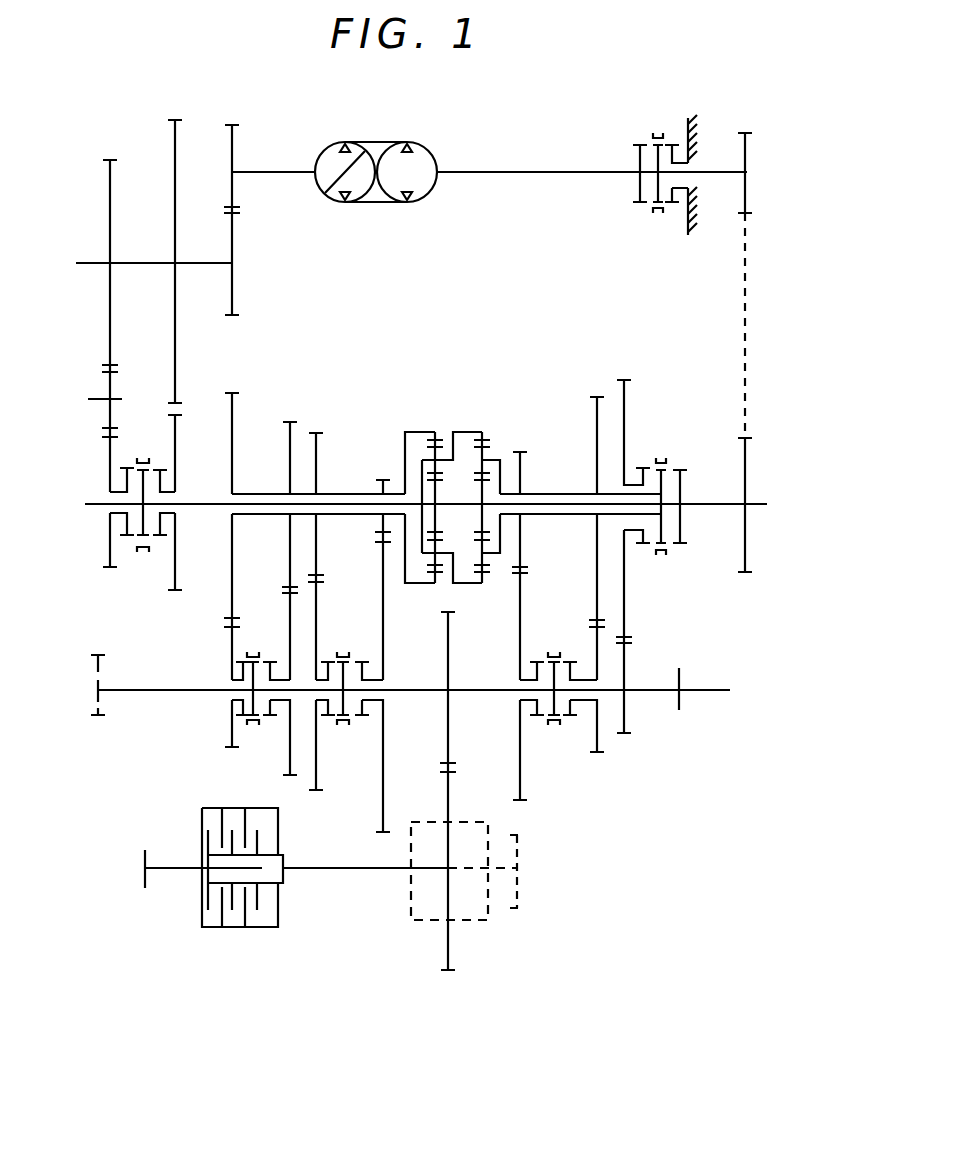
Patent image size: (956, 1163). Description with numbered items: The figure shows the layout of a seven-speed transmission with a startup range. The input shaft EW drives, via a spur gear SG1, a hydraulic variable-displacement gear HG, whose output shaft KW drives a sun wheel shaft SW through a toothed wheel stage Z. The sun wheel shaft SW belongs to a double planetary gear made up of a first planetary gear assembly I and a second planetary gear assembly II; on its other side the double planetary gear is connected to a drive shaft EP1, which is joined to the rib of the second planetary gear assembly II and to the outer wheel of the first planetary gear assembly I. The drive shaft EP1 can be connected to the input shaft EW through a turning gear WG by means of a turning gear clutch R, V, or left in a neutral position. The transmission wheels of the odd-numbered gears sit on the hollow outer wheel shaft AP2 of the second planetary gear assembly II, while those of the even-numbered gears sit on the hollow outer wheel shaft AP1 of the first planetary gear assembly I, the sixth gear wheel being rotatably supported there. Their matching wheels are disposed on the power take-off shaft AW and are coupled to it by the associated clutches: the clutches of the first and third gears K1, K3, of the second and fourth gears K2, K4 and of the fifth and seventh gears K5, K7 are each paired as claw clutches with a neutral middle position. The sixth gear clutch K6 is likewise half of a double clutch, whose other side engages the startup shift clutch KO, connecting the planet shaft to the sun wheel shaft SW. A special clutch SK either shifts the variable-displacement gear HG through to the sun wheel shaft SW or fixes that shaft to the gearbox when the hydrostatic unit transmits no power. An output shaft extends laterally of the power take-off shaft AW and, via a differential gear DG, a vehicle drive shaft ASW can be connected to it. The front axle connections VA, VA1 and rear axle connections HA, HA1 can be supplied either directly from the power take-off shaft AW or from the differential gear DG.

The input shaft EW is at (95, 262).
The turning gear WG is at (135, 336).
The turning gear clutch R is at (137, 548).
The turning gear clutch V is at (162, 538).
The spur gear SG1 is at (233, 226).
The hydraulic variable-displacement gear HG is at (384, 205).
The output shaft KW is at (522, 175).
The special clutch SK is at (657, 212).
The toothed wheel stage Z is at (748, 378).
The drive shaft EP1 is at (180, 503).
The sun wheel shaft SW is at (767, 504).
The outer wheel shaft AP2 is at (348, 494).
The second planetary gear assembly II is at (436, 422).
The first planetary gear assembly I is at (483, 422).
The outer wheel shaft AP1 is at (558, 494).
The 6th gear clutch K6 is at (661, 470).
The startup shift clutch KO is at (682, 470).
The power take-off shaft AW is at (655, 690).
The front axle connection VA1 is at (103, 690).
The rear axle connection HA1 is at (693, 688).
The 7th gear clutch K7 is at (233, 660).
The 5th gear clutch K5 is at (270, 660).
The 3rd gear clutch K3 is at (331, 660).
The 1st gear clutch K1 is at (362, 660).
The 2nd gear clutch K2 is at (537, 660).
The 4th gear clutch K4 is at (568, 660).
The differential gear DG is at (411, 920).
The front axle connection VA is at (155, 862).
The drive shaft ASW is at (358, 870).
The rear axle connection HA is at (520, 888).